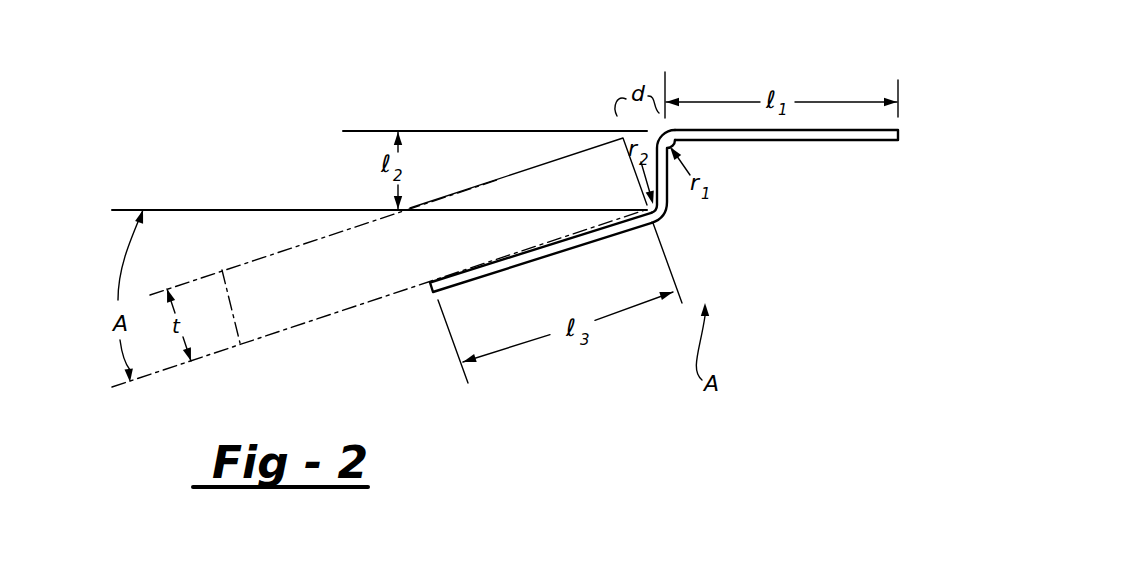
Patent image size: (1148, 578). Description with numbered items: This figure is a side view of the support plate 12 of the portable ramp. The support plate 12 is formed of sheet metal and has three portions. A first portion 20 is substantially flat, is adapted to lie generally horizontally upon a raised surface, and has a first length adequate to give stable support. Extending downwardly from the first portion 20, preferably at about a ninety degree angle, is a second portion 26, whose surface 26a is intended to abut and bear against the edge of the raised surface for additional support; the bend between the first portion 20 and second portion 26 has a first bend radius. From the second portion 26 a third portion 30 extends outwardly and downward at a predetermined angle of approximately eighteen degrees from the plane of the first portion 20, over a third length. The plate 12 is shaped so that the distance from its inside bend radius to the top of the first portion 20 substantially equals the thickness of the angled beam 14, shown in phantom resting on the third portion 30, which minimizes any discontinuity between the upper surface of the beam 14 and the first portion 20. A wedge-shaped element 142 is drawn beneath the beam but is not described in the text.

The support plate 12 is at (664, 211).
The angled beam 14 is at (301, 246).
The first portion 20 is at (747, 140).
The second portion 26 is at (709, 205).
The surface of second portion 26a is at (669, 178).
The third portion 30 is at (547, 253).
The wedge-shaped die insert 142 is at (490, 180).